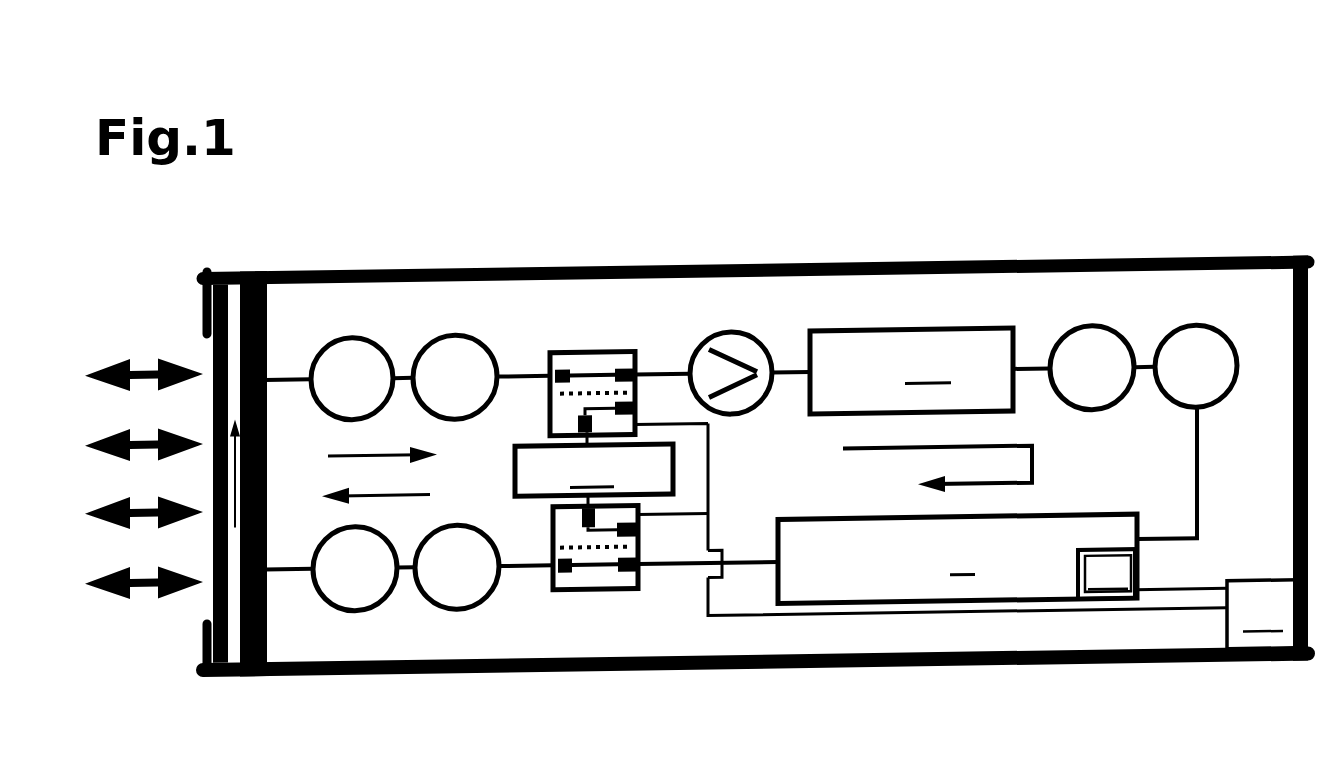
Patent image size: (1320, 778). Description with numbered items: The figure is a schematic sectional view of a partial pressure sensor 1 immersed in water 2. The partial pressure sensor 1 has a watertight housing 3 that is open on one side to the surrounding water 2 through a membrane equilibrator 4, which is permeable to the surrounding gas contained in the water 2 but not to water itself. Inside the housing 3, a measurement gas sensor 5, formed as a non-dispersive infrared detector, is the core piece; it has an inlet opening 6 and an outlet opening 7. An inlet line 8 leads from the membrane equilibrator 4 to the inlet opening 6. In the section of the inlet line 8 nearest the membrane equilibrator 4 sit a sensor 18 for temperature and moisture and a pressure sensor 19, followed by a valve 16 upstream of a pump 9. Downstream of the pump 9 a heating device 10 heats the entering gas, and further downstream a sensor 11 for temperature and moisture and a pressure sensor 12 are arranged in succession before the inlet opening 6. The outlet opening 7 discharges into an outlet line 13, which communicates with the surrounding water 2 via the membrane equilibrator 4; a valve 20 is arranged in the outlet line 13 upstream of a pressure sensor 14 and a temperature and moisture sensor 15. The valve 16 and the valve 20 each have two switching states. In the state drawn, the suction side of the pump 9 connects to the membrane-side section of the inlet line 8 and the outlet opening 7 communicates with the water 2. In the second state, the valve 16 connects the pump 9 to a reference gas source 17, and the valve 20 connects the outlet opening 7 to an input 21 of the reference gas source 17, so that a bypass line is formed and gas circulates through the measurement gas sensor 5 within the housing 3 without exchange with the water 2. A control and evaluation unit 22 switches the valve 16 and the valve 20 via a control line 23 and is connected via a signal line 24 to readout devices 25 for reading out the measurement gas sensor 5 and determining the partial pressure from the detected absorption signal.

The partial pressure sensor 1 is at (724, 271).
The water 2 is at (89, 496).
The watertight housing 3 is at (1020, 274).
The membrane equilibrator 4 is at (206, 342).
The measurement gas sensor 5 is at (957, 558).
The inlet opening 6 is at (1142, 549).
The outlet opening 7 is at (777, 571).
The inlet line 8 is at (270, 380).
The pump 9 is at (740, 348).
The heating device 10 is at (911, 371).
The sensor for temperature and moisture 11 is at (1112, 346).
The pressure sensor 12 is at (1216, 342).
The outlet line 13 is at (672, 576).
The pressure sensor 14 is at (426, 603).
The temperature and moisture sensor 15 is at (322, 602).
The valve 16 is at (596, 356).
The reference gas source 17 is at (594, 470).
The sensor for temperature and moisture 18 is at (376, 344).
The pressure sensor 19 is at (476, 343).
The valve 20 is at (556, 596).
The input 21 is at (580, 513).
The control and evaluation unit 22 is at (1262, 614).
The control line 23 is at (858, 627).
The signal line 24 is at (1194, 604).
The readout devices 25 is at (1106, 574).